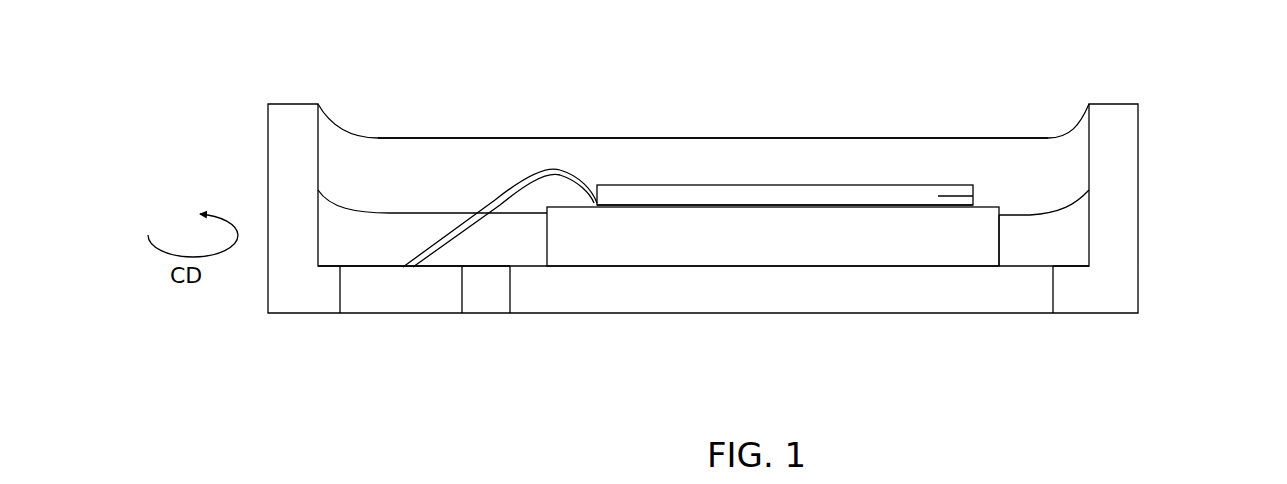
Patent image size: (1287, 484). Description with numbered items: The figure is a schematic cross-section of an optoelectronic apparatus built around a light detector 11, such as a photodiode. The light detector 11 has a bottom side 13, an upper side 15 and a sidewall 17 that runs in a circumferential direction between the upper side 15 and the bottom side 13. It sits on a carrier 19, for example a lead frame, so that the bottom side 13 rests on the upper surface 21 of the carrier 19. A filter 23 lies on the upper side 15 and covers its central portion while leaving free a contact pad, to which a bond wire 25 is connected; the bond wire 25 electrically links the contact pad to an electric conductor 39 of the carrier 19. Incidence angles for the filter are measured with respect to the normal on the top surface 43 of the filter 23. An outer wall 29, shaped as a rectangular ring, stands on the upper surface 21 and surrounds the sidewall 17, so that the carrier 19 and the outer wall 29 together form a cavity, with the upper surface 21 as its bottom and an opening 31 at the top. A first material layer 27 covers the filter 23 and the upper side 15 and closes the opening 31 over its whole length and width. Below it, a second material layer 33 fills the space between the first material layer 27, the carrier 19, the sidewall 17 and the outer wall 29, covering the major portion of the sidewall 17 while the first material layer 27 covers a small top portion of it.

The light detector 11 is at (718, 237).
The bottom side 13 is at (947, 278).
The upper side 15 is at (888, 196).
The sidewall 17 is at (1007, 235).
The carrier 19 is at (890, 277).
The upper surface 21 is at (787, 250).
The filter 23 is at (938, 196).
The bond wire 25 is at (553, 166).
The first material layer 27 is at (995, 167).
The outer wall 29 is at (297, 127).
The opening 31 is at (732, 108).
The second material layer 33 is at (355, 250).
The electric conductor 39 is at (390, 300).
The top surface 43 is at (655, 178).